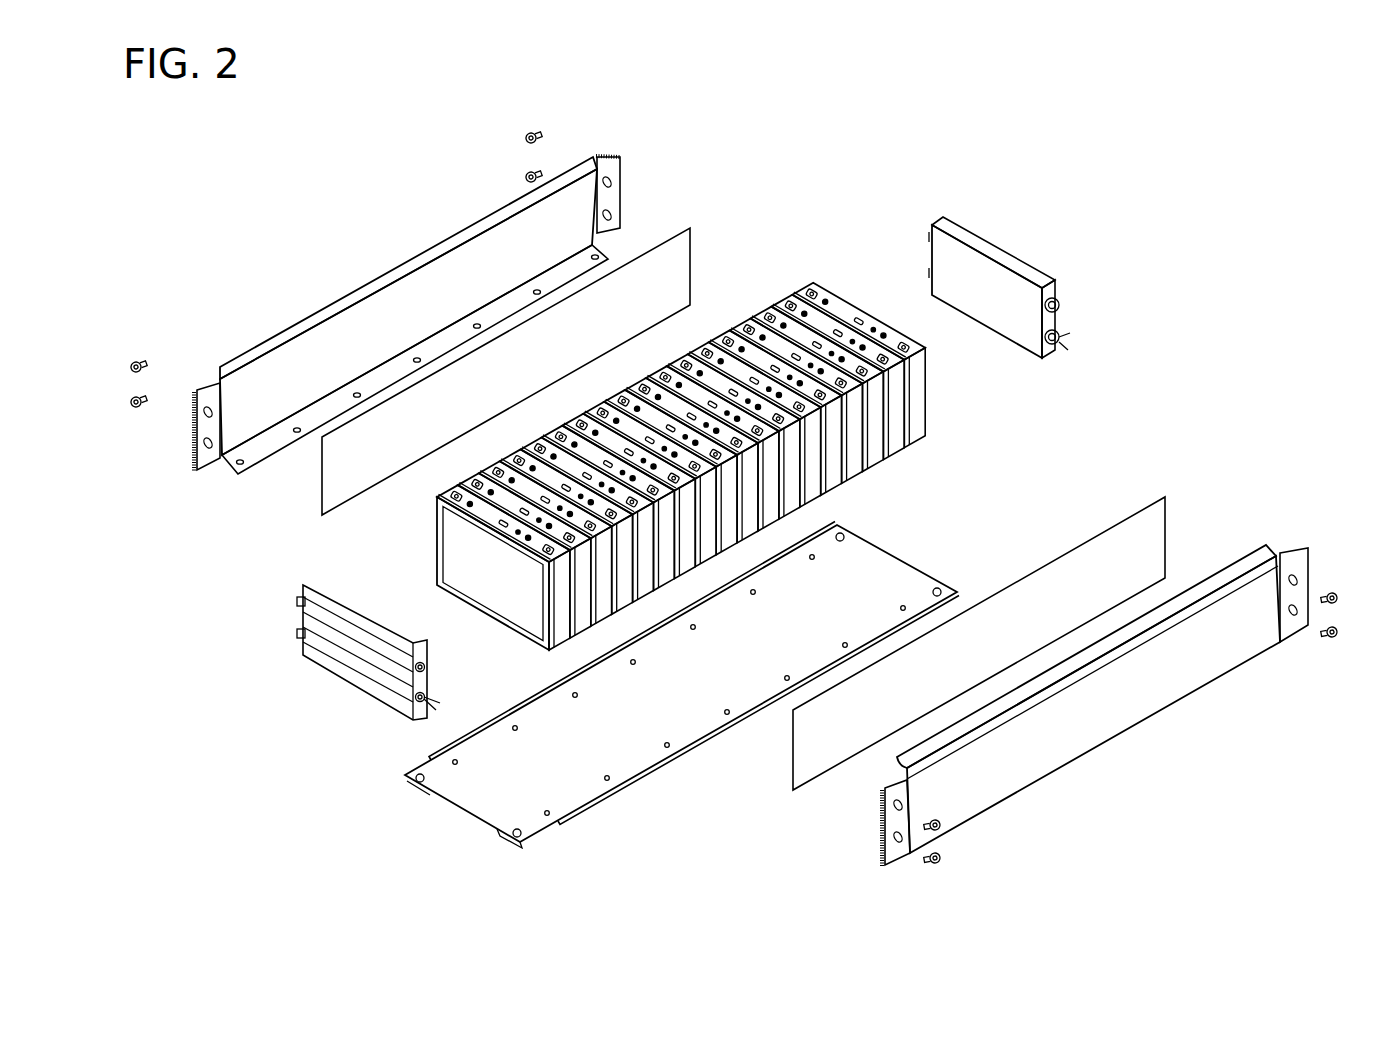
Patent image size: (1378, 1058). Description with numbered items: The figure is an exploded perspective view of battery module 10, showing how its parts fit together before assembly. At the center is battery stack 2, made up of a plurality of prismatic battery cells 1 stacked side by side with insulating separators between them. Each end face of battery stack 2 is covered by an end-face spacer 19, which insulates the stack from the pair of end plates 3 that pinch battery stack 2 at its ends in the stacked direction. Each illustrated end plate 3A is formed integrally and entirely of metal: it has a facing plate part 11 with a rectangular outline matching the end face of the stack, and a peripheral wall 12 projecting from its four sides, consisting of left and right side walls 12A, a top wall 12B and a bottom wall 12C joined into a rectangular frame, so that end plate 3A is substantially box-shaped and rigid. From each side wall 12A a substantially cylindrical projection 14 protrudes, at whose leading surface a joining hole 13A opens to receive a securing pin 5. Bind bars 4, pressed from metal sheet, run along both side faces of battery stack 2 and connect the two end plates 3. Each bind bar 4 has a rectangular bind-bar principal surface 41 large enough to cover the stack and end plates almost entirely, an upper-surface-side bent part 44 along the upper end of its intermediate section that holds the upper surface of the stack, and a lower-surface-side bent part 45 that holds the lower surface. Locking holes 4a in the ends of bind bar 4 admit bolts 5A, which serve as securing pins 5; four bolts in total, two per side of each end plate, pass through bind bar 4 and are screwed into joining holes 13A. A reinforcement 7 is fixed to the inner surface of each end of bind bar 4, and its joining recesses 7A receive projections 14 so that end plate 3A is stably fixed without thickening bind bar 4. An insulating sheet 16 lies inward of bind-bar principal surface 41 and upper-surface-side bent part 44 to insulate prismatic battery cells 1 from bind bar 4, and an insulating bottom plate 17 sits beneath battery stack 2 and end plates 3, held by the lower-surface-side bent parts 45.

The battery module 10 is at (262, 176).
The prismatic battery cell 1 is at (848, 312).
The battery stack 2 is at (762, 270).
The end plate 3 is at (658, 478).
The end plate 3A is at (1016, 230).
The bind bar 4 is at (296, 270).
The locking hole 4a is at (1296, 563).
The securing pin 5 is at (738, 494).
The bolt 5A is at (140, 358).
The reinforcement 7 is at (198, 432).
The joining recess 7A is at (197, 395).
The facing plate part 11 is at (987, 305).
The peripheral wall 12 is at (185, 533).
The side wall 12A is at (1058, 322).
The top wall 12B is at (973, 238).
The bottom wall 12C is at (330, 673).
The joining hole 13A is at (1060, 343).
The projection 14 is at (1054, 298).
The insulating sheet 16 is at (683, 268).
The bottom plate 17 is at (470, 797).
The end-face spacer 19 is at (452, 555).
The bind-bar principal surface 41 is at (455, 268).
The upper-surface-side bent part 44 is at (490, 220).
The lower-surface-side bent part 45 is at (440, 337).